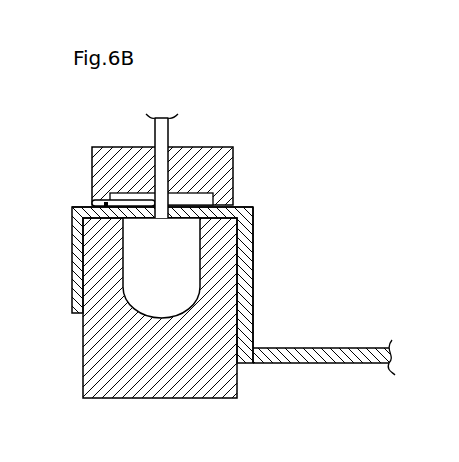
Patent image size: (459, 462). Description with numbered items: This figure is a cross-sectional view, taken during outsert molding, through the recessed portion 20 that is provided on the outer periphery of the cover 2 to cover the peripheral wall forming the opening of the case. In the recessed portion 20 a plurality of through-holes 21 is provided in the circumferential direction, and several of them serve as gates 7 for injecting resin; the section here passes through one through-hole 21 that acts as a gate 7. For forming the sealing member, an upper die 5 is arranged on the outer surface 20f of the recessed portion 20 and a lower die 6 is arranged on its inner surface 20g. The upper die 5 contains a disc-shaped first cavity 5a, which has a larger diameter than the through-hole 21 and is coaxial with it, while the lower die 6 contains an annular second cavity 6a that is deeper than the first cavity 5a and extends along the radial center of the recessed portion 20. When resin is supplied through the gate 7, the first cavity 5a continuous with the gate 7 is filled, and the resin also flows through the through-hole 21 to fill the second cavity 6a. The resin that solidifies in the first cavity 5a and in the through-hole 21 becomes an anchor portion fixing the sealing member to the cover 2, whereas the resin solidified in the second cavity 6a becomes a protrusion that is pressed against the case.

The cover 2 is at (347, 370).
The upper die 5 is at (202, 143).
The first cavity 5a is at (188, 200).
The lower die 6 is at (80, 359).
The second cavity 6a is at (176, 287).
The gate 7 is at (159, 191).
The through-hole 21 is at (104, 203).
The recessed portion 20 is at (257, 275).
The outer surface 20f is at (249, 205).
The inner surface 20g is at (253, 249).